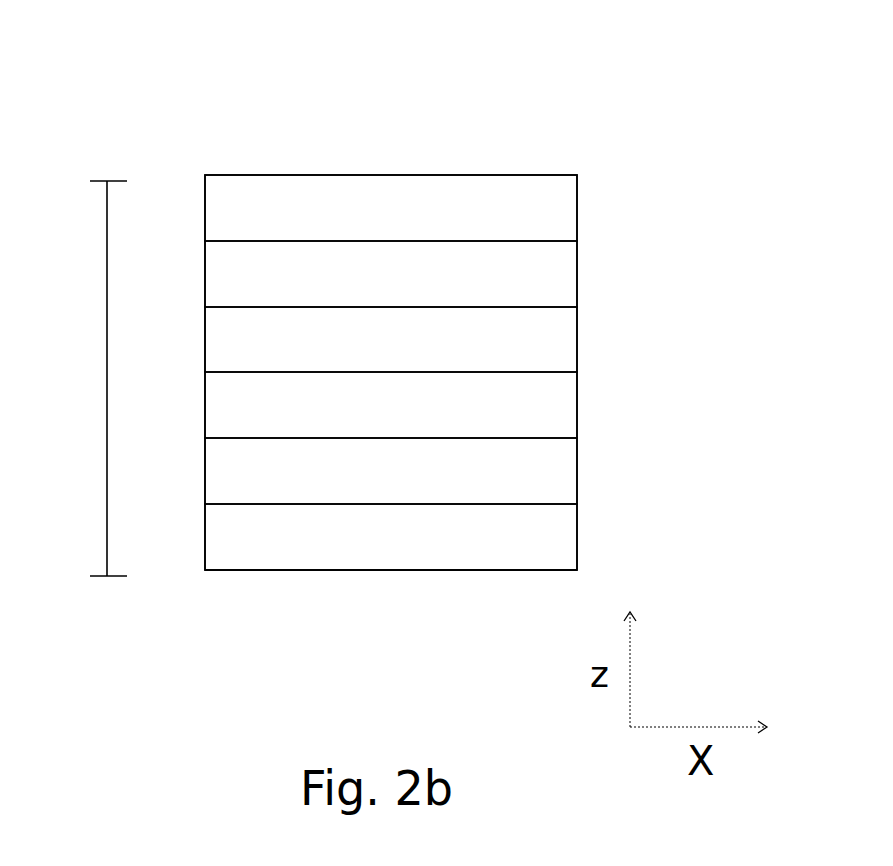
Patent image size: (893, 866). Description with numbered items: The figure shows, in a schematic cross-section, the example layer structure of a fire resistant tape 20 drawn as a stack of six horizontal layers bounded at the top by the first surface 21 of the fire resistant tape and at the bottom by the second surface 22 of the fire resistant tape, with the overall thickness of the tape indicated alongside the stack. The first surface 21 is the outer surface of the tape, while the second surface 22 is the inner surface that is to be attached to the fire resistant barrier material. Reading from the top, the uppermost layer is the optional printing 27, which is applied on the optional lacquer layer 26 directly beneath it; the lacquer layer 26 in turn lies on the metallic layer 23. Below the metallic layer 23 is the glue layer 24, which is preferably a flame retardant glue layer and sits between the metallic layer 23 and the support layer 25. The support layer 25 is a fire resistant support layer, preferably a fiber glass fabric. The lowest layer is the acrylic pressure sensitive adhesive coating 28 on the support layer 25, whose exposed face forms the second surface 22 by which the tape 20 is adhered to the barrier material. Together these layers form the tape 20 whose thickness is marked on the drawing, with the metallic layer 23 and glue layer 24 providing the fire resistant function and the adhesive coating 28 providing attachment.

The fire resistant tape 20 is at (143, 95).
The first surface of the fire resistant tape 21 is at (386, 138).
The second surface of the fire resistant tape 22 is at (375, 600).
The metallic layer of the fire resistant tape 23 is at (421, 365).
The glue layer of the fire resistant tape 24 is at (421, 430).
The support layer of the fire resistant tape 25 is at (421, 496).
The lacquer layer of the fire resistant tape 26 is at (421, 299).
The printing of the fire resistant tape 27 is at (421, 233).
The adhesive coating of the fire resistant tape 28 is at (421, 562).